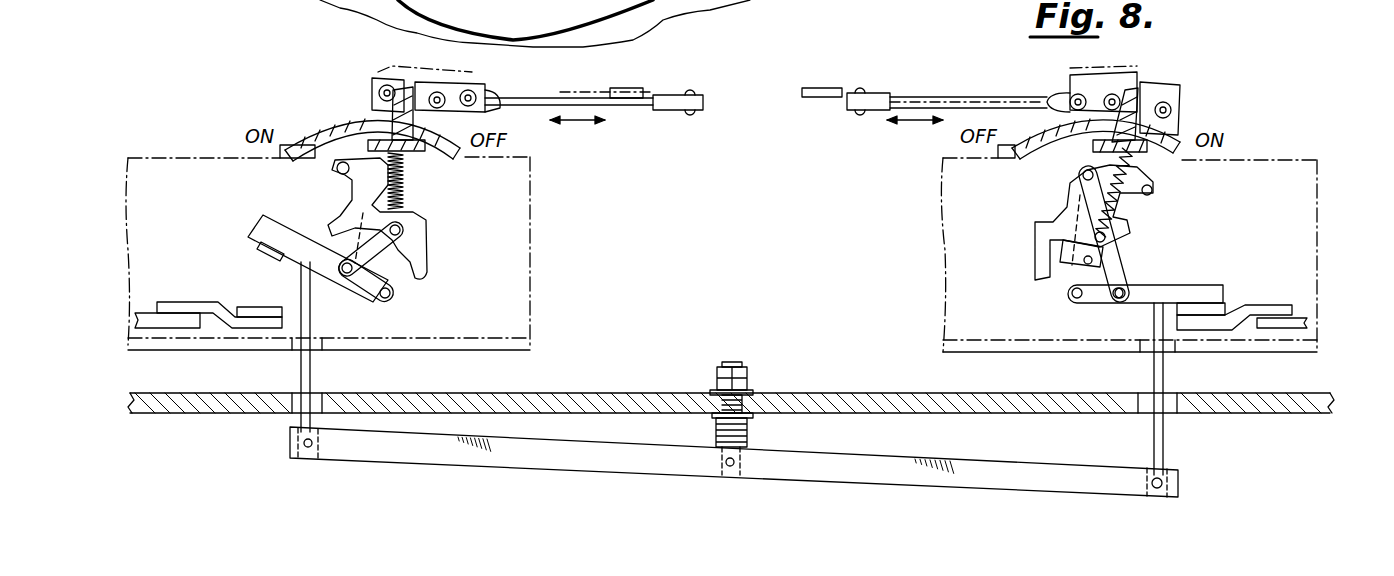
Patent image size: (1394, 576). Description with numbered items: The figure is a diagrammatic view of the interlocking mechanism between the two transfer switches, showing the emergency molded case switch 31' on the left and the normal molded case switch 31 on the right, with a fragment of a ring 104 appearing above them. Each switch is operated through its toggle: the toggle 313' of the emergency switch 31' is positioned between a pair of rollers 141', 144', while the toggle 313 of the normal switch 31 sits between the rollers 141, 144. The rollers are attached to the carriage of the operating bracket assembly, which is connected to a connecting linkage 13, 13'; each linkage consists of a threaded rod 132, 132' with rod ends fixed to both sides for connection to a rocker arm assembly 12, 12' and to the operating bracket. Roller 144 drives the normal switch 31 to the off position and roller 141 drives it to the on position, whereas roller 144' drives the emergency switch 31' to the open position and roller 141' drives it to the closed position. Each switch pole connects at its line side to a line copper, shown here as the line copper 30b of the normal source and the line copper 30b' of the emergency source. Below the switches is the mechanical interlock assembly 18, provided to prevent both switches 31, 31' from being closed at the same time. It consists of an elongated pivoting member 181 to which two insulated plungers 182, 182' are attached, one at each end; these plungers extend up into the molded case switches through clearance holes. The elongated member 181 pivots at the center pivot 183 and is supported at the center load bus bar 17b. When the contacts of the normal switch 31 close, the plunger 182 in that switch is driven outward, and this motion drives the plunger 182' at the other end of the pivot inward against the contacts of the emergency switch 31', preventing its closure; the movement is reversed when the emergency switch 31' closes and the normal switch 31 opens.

The ring gear 104 is at (620, 23).
The emergency molded case switch 31' is at (326, 226).
The roller 141' is at (388, 156).
The toggle 313' is at (365, 98).
The roller 144' is at (389, 90).
The connecting linkage 13' is at (579, 126).
The threaded rod 132' is at (577, 79).
The rocker arm assembly 12' is at (656, 85).
The line copper 30b' is at (281, 240).
The insulated plunger 182' is at (351, 347).
The center load bus bar 17b is at (857, 398).
The elongated pivoting member 181 is at (623, 448).
The mechanical interlock assembly 18 is at (697, 368).
The center pivot 183 is at (737, 460).
The normal molded case switch 31 is at (1129, 233).
The roller 141 is at (1096, 103).
The toggle 313 is at (1150, 95).
The roller 144 is at (1155, 100).
The connecting linkage 13 is at (978, 83).
The threaded rod 132 is at (965, 78).
The rocker arm assembly 12 is at (840, 82).
The line copper 30b is at (1201, 239).
The insulated plunger 182 is at (1186, 389).